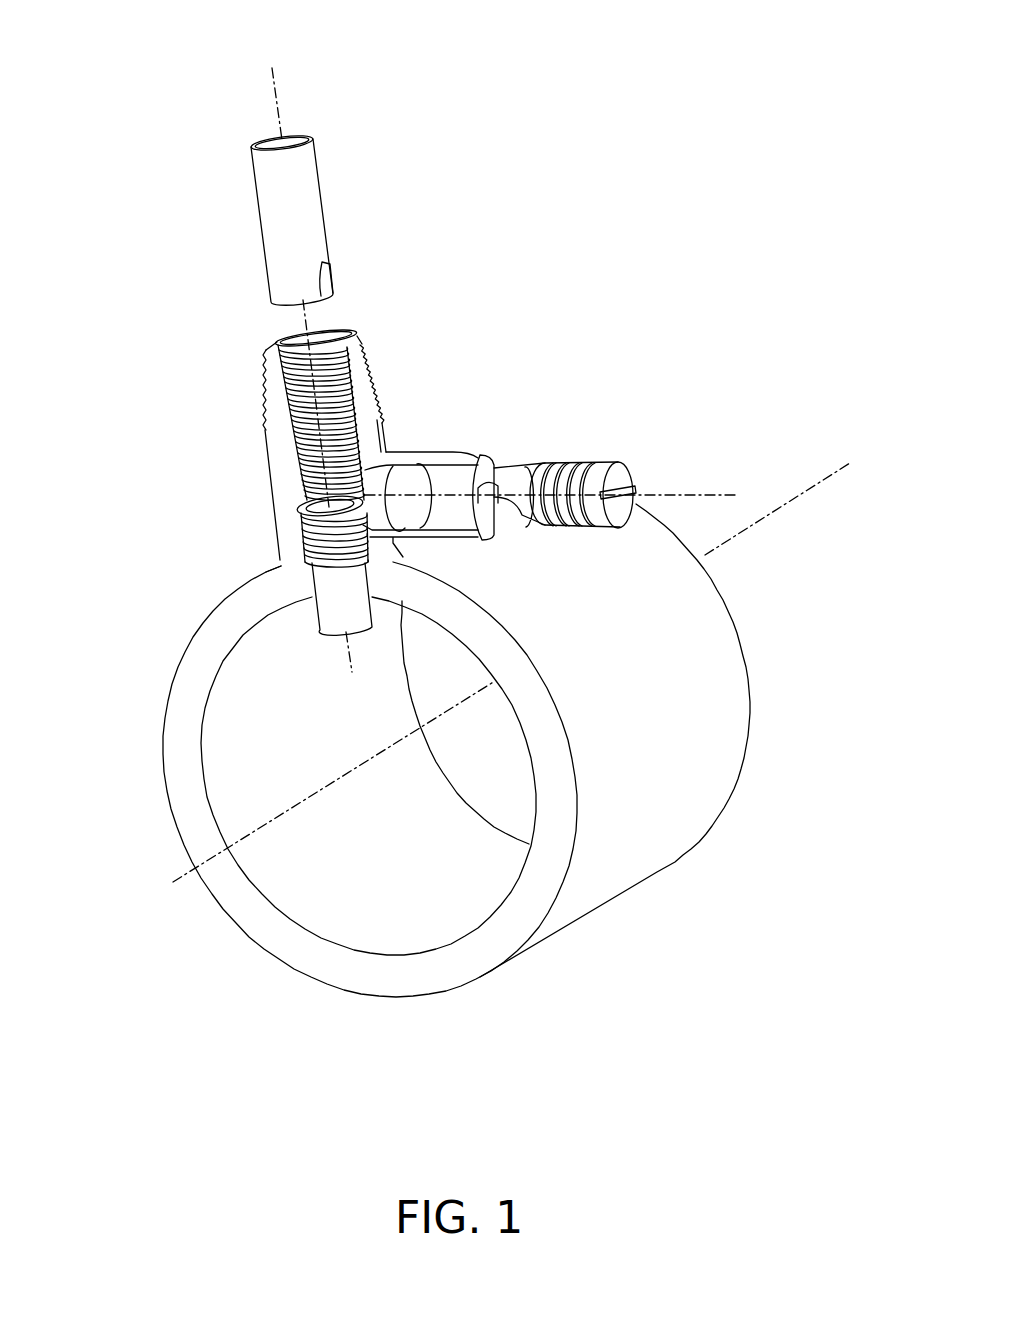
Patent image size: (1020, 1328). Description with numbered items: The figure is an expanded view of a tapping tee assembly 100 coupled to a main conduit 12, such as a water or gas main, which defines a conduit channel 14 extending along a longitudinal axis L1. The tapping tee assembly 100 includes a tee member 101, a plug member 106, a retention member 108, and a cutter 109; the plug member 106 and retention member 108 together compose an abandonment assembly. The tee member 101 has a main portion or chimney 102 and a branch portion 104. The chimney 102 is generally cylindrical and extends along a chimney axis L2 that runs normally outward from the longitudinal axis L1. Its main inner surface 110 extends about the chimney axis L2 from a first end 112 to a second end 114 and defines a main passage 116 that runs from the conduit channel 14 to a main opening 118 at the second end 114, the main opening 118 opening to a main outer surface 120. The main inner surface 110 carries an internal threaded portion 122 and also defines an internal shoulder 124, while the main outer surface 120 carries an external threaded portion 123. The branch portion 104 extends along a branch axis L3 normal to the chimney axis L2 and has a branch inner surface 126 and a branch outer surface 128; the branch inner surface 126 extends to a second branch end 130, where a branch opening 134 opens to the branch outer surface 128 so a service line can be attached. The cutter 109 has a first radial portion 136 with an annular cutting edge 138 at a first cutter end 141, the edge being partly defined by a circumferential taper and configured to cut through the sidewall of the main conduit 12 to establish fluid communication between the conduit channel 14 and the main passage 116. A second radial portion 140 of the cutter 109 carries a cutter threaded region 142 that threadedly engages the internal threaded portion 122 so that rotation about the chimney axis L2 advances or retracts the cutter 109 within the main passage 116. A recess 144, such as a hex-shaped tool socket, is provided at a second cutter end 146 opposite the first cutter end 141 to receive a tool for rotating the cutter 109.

The main conduit 12 is at (416, 750).
The conduit channel 14 is at (224, 766).
The tapping tee assembly 100 is at (389, 413).
The tee member 101 is at (361, 340).
The main portion (chimney) 102 is at (297, 416).
The branch portion 104 is at (505, 427).
The plug member 106 is at (586, 459).
The retention member 108 is at (260, 232).
The cutter 109 is at (304, 582).
The main inner surface 110 is at (262, 384).
The first end 112 is at (273, 556).
The second end 114 is at (261, 344).
The main passage 116 is at (301, 414).
The main opening 118 is at (327, 338).
The main outer surface 120 is at (428, 449).
The internal threaded portion 122 is at (295, 445).
The external threaded portion 123 is at (374, 351).
The internal shoulder 124 is at (372, 567).
The branch inner surface 126 is at (450, 467).
The branch outer surface 128 is at (453, 452).
The second branch end 130 is at (490, 536).
The branch opening 134 is at (490, 516).
The first radial portion 136 is at (322, 628).
The annular cutting edge 138 is at (354, 635).
The second radial portion 140 is at (295, 524).
The first cutter end 141 is at (341, 643).
The cutter threaded region 142 is at (386, 549).
The recess 144 is at (308, 494).
The second cutter end 146 is at (370, 503).
The longitudinal axis L1 is at (176, 880).
The chimney axis L2 is at (288, 93).
The branch axis L3 is at (692, 490).